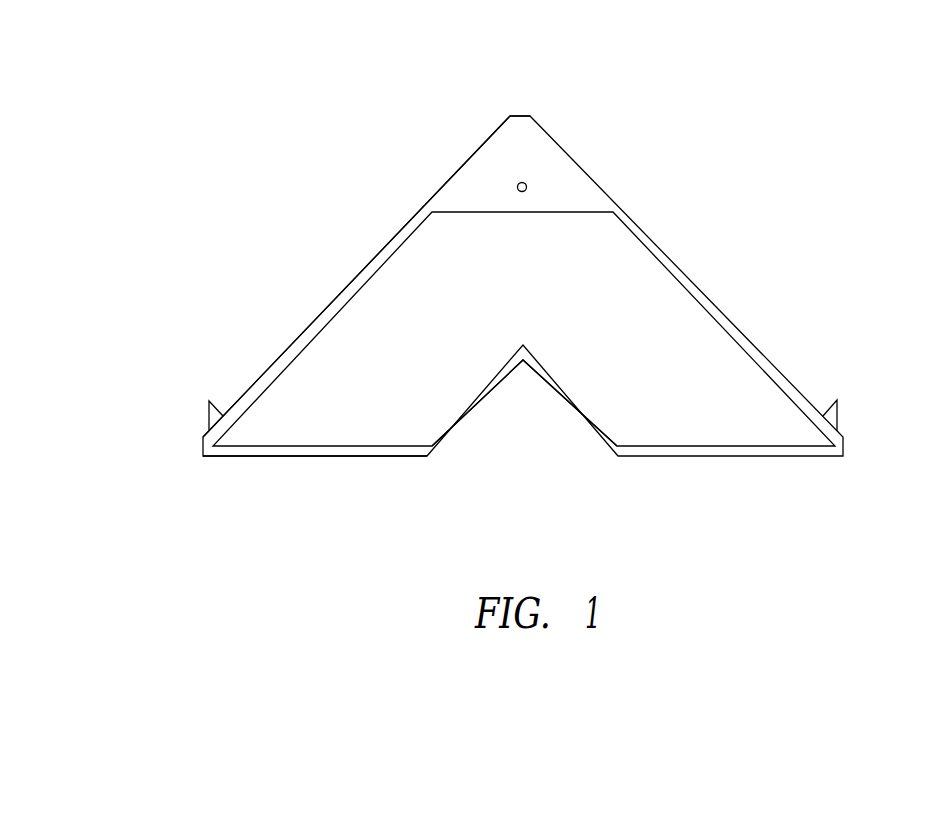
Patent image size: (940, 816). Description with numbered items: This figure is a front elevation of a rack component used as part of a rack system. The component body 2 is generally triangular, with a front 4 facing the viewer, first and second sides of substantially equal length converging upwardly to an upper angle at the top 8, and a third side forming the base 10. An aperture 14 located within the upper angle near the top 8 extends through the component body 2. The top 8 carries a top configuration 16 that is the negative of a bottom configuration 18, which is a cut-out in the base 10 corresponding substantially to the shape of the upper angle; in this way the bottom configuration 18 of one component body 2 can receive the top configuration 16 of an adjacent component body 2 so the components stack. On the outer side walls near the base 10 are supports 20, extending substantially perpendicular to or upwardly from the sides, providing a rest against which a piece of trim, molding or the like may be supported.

The component body 2 is at (775, 128).
The front 4 is at (694, 342).
The top 8 is at (552, 130).
The base 10 is at (357, 458).
The aperture 14 is at (527, 188).
The top configuration 16 is at (450, 178).
The bottom configuration 18 is at (470, 416).
The supports 20 is at (207, 413).